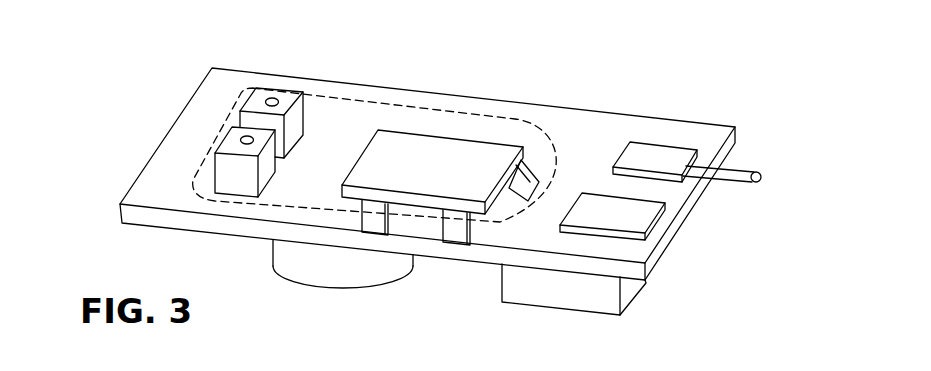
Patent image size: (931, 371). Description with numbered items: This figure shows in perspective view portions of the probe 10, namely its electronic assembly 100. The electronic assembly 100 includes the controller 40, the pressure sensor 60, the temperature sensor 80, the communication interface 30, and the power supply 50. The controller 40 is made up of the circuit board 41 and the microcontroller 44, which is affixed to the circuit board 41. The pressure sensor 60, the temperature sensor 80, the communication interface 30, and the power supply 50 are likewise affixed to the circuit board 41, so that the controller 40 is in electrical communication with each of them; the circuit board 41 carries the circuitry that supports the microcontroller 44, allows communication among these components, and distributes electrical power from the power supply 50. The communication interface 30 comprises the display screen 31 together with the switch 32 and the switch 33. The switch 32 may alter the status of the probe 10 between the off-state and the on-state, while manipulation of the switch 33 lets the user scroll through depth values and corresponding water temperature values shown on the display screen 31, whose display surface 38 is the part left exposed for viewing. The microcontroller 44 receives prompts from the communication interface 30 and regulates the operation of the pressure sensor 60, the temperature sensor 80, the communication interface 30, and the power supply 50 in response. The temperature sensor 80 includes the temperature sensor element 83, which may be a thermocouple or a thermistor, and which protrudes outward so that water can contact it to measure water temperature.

The probe 10 is at (739, 74).
The electronic assembly 100 is at (146, 89).
The communication interface 30 is at (342, 117).
The display screen 31 is at (430, 157).
The switch 32 is at (217, 182).
The switch 33 is at (299, 109).
The display surface 38 is at (463, 185).
The controller 40 is at (585, 128).
The circuit board 41 is at (553, 121).
The microcontroller 44 is at (642, 217).
The power supply 50 is at (548, 295).
The pressure sensor 60 is at (333, 272).
The temperature sensor 80 is at (658, 155).
The temperature sensor element 83 is at (737, 161).